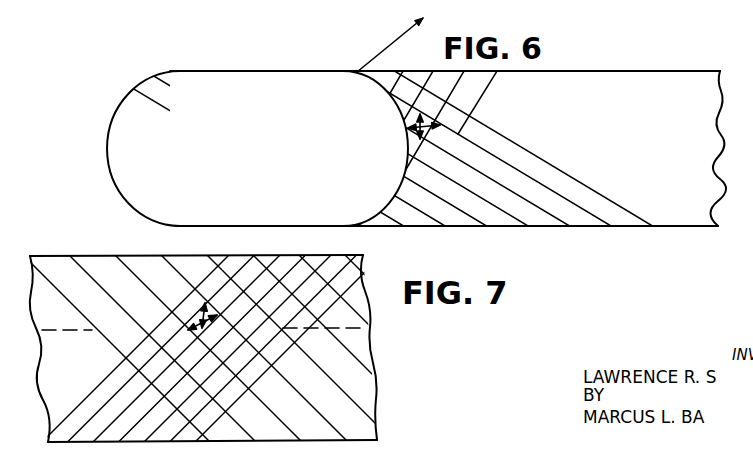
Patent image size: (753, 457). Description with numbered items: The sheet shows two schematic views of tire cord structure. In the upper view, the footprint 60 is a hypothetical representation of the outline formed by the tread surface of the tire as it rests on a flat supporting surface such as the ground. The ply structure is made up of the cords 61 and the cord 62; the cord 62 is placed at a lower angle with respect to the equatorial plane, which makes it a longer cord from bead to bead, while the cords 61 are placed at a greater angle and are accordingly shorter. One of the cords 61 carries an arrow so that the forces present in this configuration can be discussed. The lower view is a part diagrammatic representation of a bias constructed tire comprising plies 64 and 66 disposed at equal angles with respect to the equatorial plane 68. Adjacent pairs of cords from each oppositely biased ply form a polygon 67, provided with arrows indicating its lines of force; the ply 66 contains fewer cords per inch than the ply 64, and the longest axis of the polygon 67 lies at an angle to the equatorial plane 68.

In FIG. 6, the footprint 60 is at (131, 82).
In FIG. 6, the cords 61 is at (396, 43).
In FIG. 6, the cord 62 is at (530, 150).
In FIG. 7, the ply 64 is at (90, 390).
In FIG. 7, the ply 66 is at (354, 397).
In FIG. 7, the polygon 67 is at (204, 300).
In FIG. 7, the equatorial plane 68 is at (310, 326).